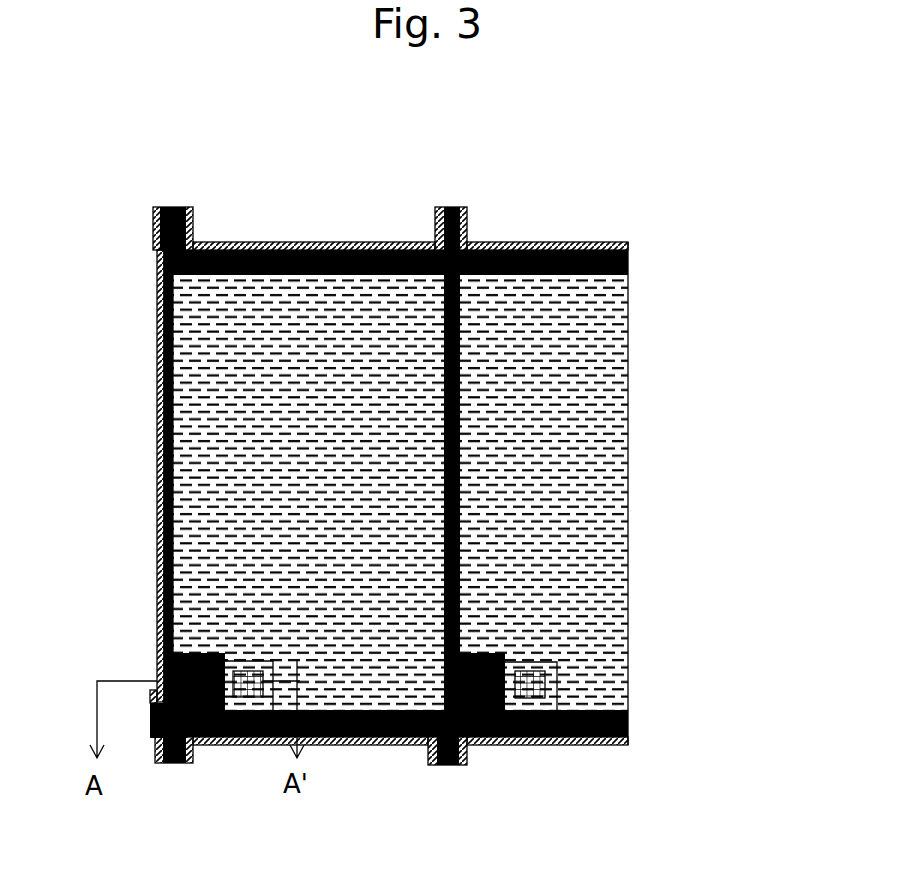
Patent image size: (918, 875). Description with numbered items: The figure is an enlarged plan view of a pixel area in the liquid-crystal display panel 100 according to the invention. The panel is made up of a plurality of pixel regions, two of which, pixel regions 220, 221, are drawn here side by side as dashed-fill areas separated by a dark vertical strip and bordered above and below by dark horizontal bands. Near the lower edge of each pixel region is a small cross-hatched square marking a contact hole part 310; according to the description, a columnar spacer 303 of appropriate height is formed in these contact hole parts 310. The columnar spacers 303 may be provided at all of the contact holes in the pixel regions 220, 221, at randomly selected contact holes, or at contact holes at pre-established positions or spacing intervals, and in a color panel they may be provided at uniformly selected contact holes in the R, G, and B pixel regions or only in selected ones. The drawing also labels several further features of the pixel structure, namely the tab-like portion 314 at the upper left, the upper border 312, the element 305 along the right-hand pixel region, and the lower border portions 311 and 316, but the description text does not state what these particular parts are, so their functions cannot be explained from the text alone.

The liquid-crystal display panel 100 is at (245, 123).
The source line terminal 314 is at (196, 212).
The pixel region 221 is at (345, 330).
The gate line 312 is at (520, 250).
The pixel region 220 is at (610, 374).
The drain electrode 305 is at (612, 456).
The contact hole part 310 is at (556, 678).
The gate line 311 is at (315, 745).
The source line 316 is at (481, 746).
The columnar spacer 303 is at (545, 745).